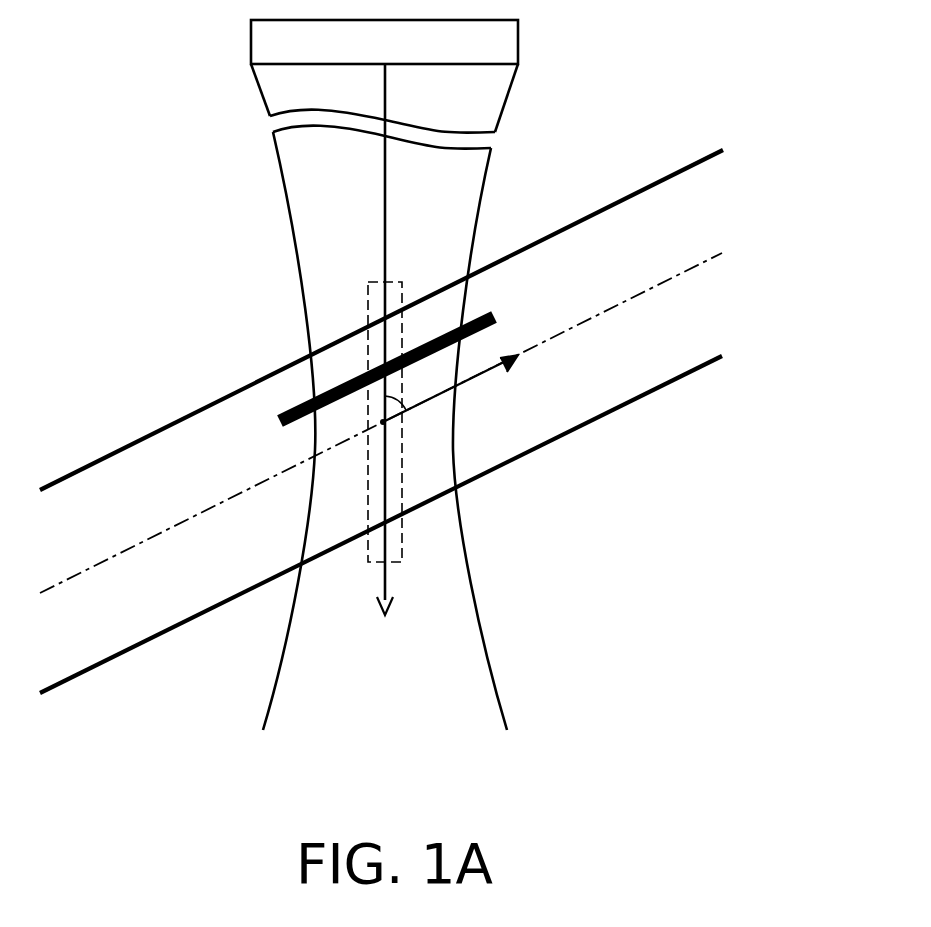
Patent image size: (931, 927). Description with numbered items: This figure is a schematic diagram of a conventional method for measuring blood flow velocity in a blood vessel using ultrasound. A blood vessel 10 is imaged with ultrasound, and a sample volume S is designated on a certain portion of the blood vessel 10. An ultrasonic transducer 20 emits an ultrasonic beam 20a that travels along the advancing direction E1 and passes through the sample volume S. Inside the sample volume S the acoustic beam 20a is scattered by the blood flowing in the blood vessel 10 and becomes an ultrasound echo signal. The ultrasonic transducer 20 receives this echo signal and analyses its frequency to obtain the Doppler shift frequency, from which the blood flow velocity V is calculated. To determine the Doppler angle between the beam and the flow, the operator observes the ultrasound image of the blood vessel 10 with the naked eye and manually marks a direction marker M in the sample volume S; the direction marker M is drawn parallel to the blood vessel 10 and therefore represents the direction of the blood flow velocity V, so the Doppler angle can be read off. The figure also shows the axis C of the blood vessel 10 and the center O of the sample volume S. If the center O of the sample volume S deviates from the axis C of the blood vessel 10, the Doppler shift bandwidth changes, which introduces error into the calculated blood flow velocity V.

The blood vessel 10 is at (700, 158).
The ultrasonic transducer 20 is at (503, 43).
The ultrasonic beam 20a is at (462, 198).
The advancing direction E1 is at (382, 213).
The axis of blood vessel C is at (705, 257).
The direction marker M is at (483, 312).
The blood flow velocity V is at (478, 372).
The center of sample volume O is at (386, 427).
The sample volume S is at (400, 543).